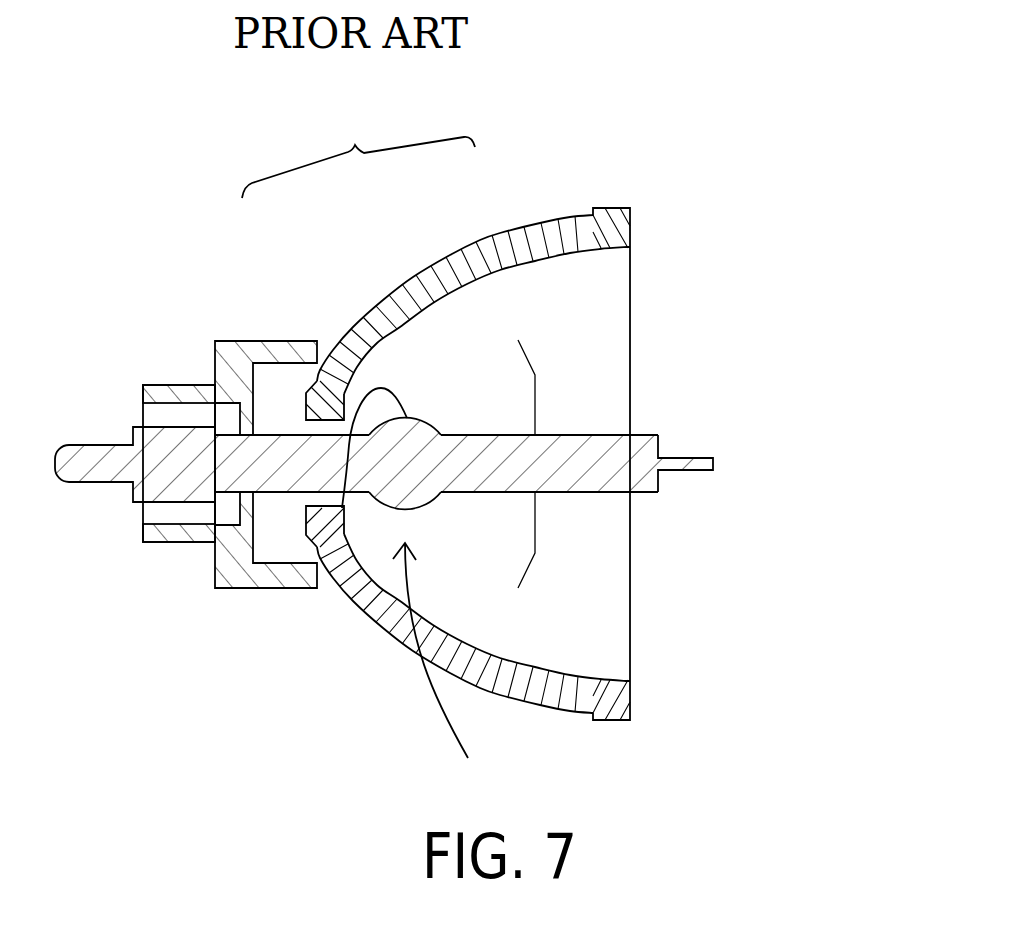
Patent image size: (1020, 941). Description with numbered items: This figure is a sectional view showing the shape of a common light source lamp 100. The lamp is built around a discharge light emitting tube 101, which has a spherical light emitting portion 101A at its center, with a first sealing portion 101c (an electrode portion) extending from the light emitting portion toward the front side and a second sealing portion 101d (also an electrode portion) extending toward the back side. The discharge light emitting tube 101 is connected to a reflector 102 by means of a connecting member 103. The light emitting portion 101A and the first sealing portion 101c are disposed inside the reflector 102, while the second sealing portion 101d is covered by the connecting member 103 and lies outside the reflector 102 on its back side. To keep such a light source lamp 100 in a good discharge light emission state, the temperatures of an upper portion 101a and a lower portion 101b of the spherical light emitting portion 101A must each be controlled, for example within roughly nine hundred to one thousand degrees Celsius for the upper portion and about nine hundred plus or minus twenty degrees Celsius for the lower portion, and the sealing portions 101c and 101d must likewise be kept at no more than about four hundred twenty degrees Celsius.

The light source lamp 100 is at (358, 148).
The discharge light emitting tube 101 is at (482, 479).
The upper portion 101a is at (342, 508).
The lower portion 101b is at (413, 512).
The first sealing portion 101c is at (605, 458).
The second sealing portion 101d is at (258, 455).
The light emitting portion 101A is at (455, 671).
The reflector 102 is at (523, 250).
The connecting member 103 is at (260, 393).